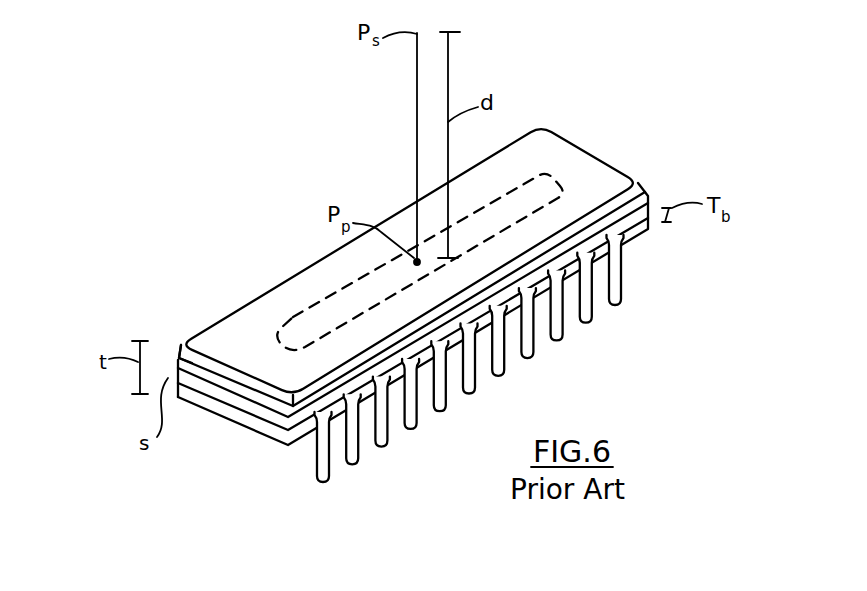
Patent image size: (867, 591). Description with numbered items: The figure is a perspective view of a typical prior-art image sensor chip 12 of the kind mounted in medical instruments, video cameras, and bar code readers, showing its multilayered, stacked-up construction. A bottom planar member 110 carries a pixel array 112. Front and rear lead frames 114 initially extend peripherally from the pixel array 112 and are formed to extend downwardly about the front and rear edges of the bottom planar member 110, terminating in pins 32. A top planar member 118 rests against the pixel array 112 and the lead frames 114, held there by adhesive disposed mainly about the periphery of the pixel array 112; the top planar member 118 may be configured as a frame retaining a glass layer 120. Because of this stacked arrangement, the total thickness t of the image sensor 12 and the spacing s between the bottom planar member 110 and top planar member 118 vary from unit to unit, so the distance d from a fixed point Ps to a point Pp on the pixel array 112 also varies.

The image sensor chip 12 is at (446, 315).
The bottom planar member 110 is at (633, 241).
The top planar member 118 is at (654, 196).
The glass layer 120 is at (184, 344).
The pixel array 112 is at (291, 318).
The lead frames 114 is at (310, 459).
The pins 32 is at (408, 432).